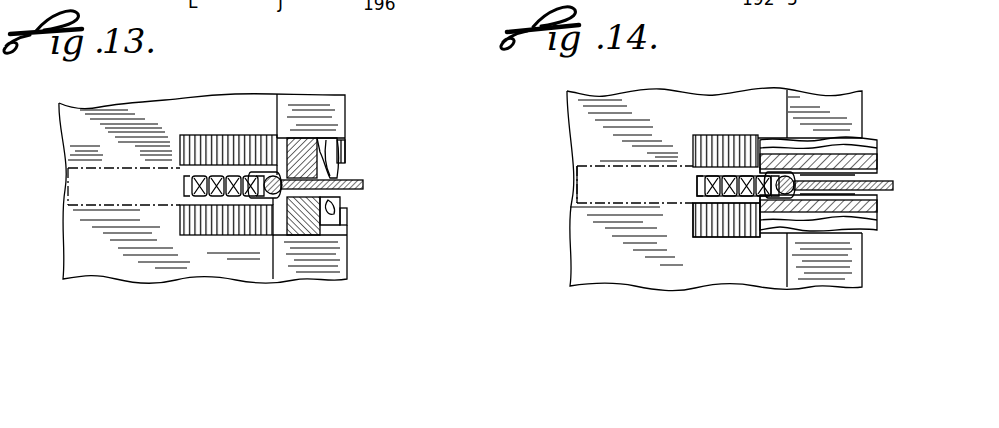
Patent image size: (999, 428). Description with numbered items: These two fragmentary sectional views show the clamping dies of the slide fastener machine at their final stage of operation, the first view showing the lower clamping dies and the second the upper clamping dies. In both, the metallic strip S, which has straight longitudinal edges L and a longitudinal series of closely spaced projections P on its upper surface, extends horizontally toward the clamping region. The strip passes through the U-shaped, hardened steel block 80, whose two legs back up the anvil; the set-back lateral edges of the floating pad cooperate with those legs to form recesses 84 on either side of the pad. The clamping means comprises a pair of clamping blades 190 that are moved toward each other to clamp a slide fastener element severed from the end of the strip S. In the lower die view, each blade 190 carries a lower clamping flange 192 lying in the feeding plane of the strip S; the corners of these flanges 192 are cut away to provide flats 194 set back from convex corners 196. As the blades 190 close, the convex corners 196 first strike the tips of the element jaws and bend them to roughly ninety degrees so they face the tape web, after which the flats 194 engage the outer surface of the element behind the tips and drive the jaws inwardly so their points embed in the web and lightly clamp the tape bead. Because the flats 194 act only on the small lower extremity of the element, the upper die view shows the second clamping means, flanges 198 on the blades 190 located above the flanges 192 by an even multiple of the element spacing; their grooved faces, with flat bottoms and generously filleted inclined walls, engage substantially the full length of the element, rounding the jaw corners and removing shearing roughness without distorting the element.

In FIG. 13, the U-shaped block 80 is at (110, 263).
In FIG. 14, the U-shaped block 80 is at (643, 278).
In FIG. 13, the recesses 84 is at (214, 150).
In FIG. 14, the recesses 84 is at (710, 157).
In FIG. 13, the clamping blades 190 is at (313, 235).
In FIG. 14, the clamping blades 190 is at (845, 150).
In FIG. 13, the lower clamping flange 192 is at (340, 208).
In FIG. 13, the flats 194 is at (336, 196).
In FIG. 13, the convex corners 196 is at (323, 163).
In FIG. 14, the flanges 198 is at (877, 160).
In FIG. 14, the metallic strip S is at (600, 183).
In FIG. 14, the longitudinal edges L is at (717, 213).
In FIG. 14, the projections P is at (733, 197).